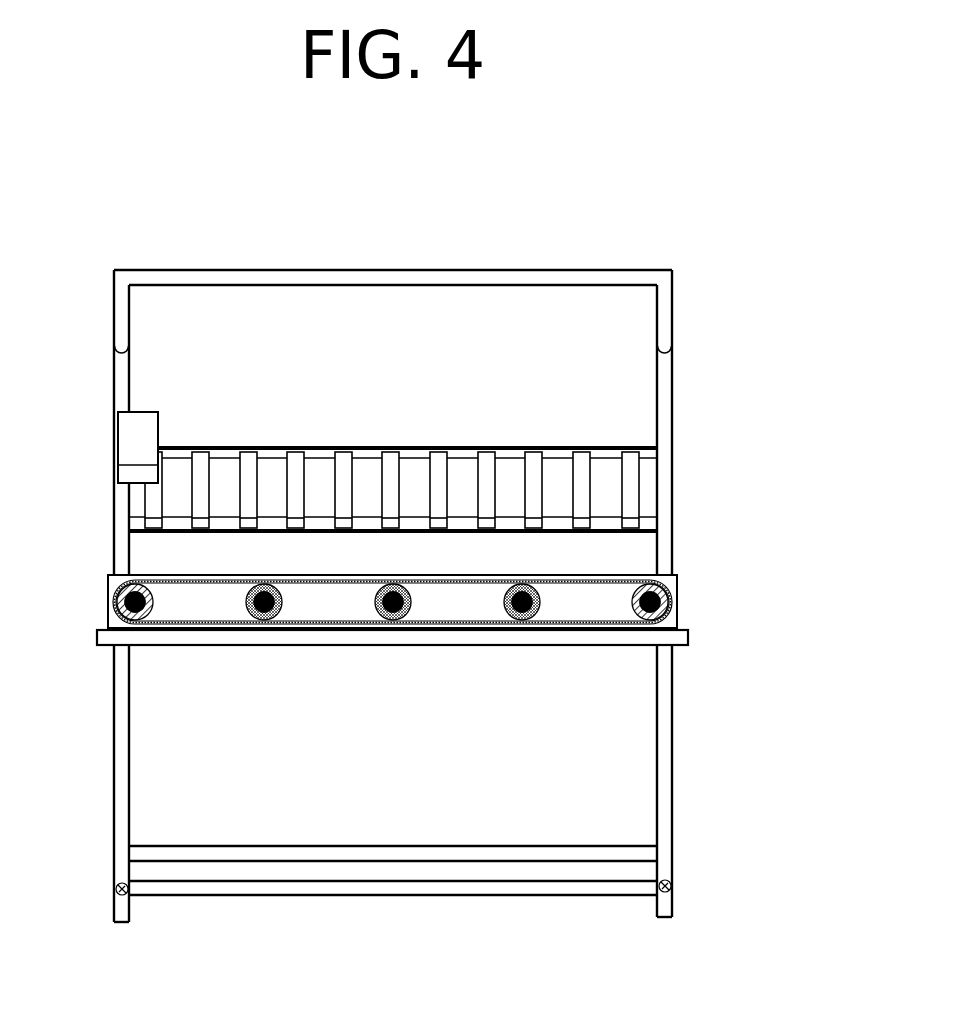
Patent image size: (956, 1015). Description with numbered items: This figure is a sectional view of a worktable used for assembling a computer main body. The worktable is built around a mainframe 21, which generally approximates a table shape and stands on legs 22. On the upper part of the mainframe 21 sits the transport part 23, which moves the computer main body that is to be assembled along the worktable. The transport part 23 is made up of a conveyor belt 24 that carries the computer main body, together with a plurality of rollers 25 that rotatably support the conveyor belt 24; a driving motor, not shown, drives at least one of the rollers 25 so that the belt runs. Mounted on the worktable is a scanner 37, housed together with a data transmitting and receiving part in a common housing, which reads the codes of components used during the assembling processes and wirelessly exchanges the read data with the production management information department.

The mainframe 21 is at (675, 632).
The legs 22 is at (665, 750).
The transport part 23 is at (475, 550).
The conveyor belt 24 is at (487, 579).
The rollers 25 is at (542, 572).
The scanner 37 is at (128, 447).